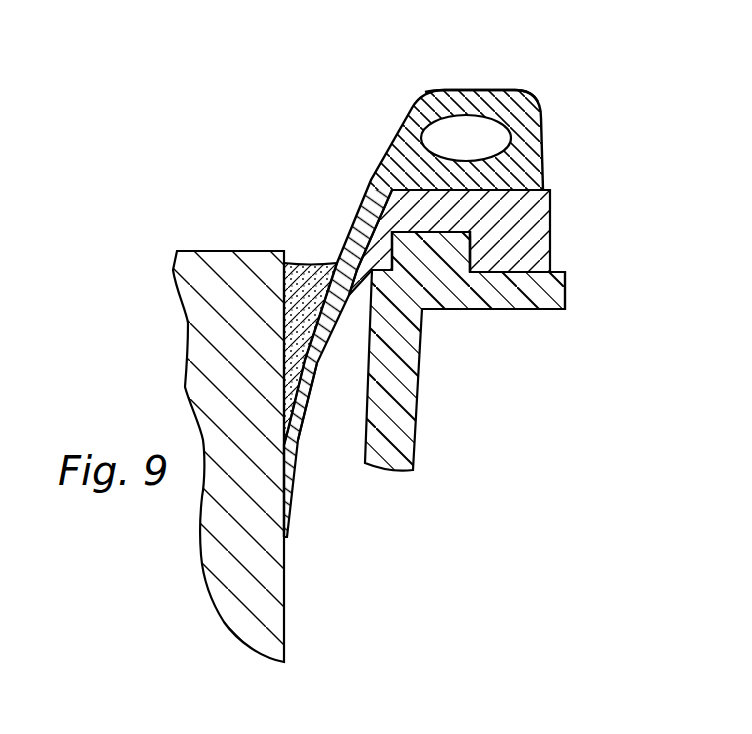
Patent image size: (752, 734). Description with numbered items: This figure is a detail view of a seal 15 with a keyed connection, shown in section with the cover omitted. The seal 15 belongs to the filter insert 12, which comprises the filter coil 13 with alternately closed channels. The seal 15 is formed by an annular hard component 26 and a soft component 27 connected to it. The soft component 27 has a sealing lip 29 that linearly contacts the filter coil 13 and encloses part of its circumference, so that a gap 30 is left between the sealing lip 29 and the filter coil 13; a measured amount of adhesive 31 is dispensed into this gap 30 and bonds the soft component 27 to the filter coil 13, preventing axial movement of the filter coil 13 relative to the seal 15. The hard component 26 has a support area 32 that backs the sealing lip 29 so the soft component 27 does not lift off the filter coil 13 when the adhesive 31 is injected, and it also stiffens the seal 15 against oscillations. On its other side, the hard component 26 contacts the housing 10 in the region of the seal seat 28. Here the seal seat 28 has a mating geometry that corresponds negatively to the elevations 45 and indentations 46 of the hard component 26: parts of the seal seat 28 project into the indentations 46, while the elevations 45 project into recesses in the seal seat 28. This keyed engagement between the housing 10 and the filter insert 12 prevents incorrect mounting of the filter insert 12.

The housing 10 is at (418, 400).
The filter insert 12 is at (211, 242).
The filter coil 13 is at (265, 262).
The seal 15 is at (556, 163).
The hard component 26 is at (535, 212).
The soft component 27 is at (497, 89).
The seal seat 28 is at (565, 279).
The sealing lip 29 is at (288, 460).
The gap 30 is at (311, 251).
The adhesive 31 is at (283, 300).
The support area 32 is at (327, 362).
The elevations 45 is at (527, 263).
The indentations 46 is at (479, 260).